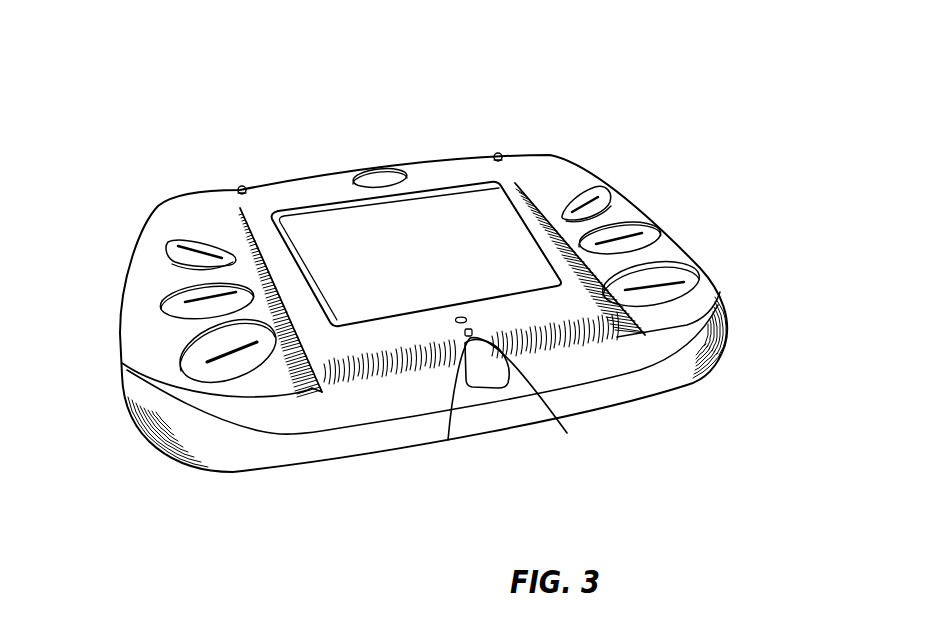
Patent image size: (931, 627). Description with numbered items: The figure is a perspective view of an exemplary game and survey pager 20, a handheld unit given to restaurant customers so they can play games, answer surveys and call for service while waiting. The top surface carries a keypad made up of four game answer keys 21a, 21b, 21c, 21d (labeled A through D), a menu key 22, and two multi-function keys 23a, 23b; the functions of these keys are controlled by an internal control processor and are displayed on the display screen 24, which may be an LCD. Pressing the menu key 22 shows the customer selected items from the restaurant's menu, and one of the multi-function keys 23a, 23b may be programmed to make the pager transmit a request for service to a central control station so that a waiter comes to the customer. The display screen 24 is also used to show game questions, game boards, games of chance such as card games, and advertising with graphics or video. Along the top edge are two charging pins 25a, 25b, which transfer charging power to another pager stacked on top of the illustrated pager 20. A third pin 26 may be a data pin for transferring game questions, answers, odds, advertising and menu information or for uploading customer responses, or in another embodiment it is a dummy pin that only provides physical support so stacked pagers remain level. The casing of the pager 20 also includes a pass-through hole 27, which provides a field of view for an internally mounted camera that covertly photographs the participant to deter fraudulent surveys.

The game and survey pager 20 is at (738, 68).
The game answer key 21a is at (170, 247).
The game answer key 21b is at (190, 357).
The game answer key 21c is at (598, 193).
The game answer key 21d is at (697, 283).
The menu key 22 is at (380, 174).
The multi-function key 23a is at (163, 303).
The multi-function key 23b is at (645, 232).
The display screen 24 is at (431, 279).
The charging pin 25a is at (242, 186).
The charging pin 25b is at (499, 154).
The third pin 26 is at (466, 336).
The pass-through hole 27 is at (467, 320).